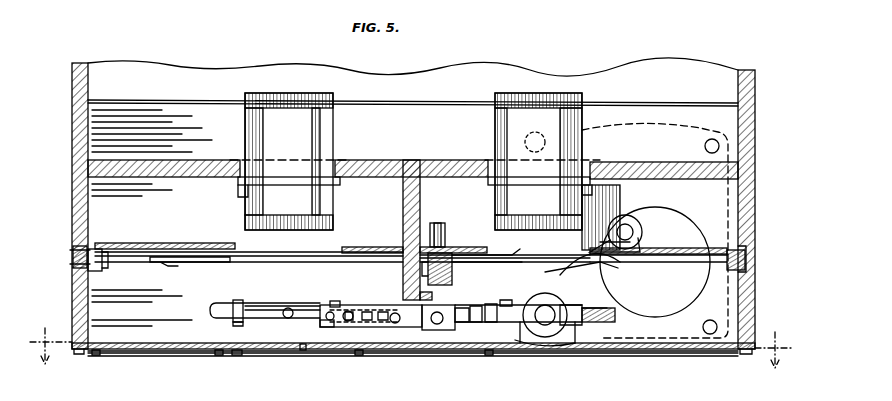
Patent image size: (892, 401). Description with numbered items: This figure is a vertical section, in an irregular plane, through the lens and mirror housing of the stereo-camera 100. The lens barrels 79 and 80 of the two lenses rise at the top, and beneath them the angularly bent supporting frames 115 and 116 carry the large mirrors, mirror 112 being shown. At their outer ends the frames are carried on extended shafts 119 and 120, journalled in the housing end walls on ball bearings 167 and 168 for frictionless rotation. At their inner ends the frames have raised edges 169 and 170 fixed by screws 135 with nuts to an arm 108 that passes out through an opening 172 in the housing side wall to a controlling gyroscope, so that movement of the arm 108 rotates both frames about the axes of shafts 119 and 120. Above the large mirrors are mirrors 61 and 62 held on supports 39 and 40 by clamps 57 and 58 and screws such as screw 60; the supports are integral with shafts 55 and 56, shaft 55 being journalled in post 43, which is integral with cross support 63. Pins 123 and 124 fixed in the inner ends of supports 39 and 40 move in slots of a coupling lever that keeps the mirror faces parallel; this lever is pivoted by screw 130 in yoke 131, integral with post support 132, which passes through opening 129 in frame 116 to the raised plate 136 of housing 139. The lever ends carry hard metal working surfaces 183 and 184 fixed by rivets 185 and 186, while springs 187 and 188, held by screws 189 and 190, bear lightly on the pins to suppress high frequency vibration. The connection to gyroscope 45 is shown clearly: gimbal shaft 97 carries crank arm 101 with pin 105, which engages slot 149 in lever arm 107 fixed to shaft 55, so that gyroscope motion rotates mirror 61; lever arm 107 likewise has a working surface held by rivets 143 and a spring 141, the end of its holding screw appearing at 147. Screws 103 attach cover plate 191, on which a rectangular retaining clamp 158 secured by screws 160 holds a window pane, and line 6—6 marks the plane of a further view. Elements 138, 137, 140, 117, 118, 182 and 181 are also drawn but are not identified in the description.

The stereo-camera 100 is at (72, 82).
The lens barrel 80 is at (284, 118).
The lens barrel 79 is at (532, 118).
The flange 138 is at (268, 176).
The flange 137 is at (510, 176).
The raised plate 136 is at (372, 170).
The plunger end 140 is at (266, 202).
The housing 139 is at (495, 192).
The gyroscope 45 is at (648, 190).
The post support 132 is at (408, 203).
The opening 129 is at (398, 247).
The opening 172 is at (438, 222).
The arm 108 is at (446, 232).
The shaft 117 is at (500, 254).
The supporting frame 116 is at (160, 243).
The coupling 118 is at (252, 252).
The mirror 112 is at (212, 263).
The extended shaft 120 is at (73, 255).
The ball bearing 168 is at (82, 266).
The screws 135 is at (450, 272).
The raised edge 169 is at (447, 282).
The raised edge 170 is at (430, 297).
The screw end 147 is at (518, 262).
The lever arm 107 is at (528, 264).
The yoke 131 is at (393, 312).
The screw 130 is at (388, 294).
The supporting frame 115 is at (705, 249).
The extended shaft 119 is at (746, 260).
The ball bearing 167 is at (748, 250).
The slot 149 is at (680, 283).
The gimbal shaft 97 is at (625, 228).
The crank arm 101 is at (636, 236).
The rivets 143 is at (638, 244).
The spring vibration suppressing means 141 is at (592, 270).
The pin 105 is at (612, 266).
The mirror 61 is at (614, 314).
The mirror support 39 is at (604, 323).
The mirror support 40 is at (218, 314).
The mirror 62 is at (265, 304).
The clamp 58 is at (238, 300).
The screw 60 is at (238, 326).
The shaft 56 is at (286, 318).
The rivets 186 is at (326, 318).
The screw 189 is at (438, 330).
The hard metal working surface 184 is at (300, 348).
The pin 124 is at (330, 326).
The pawl 182 is at (347, 322).
The spring vibration suppressing means 188 is at (368, 322).
The screw 190 is at (388, 325).
The spring vibration suppressing means 187 is at (460, 325).
The rivets 185 is at (475, 322).
The hard metal working surface 183 is at (492, 322).
The shaft 181 is at (512, 322).
The pin 123 is at (505, 325).
The post 43 is at (545, 337).
The cross support 63 is at (555, 325).
The clamp 57 is at (590, 343).
The shaft 55 is at (576, 345).
The screws 103 is at (80, 354).
The retaining clamp 158 is at (175, 356).
The screws 160 is at (96, 356).
The cover plate 191 is at (236, 356).
The section line 6— 6 is at (411, 346).